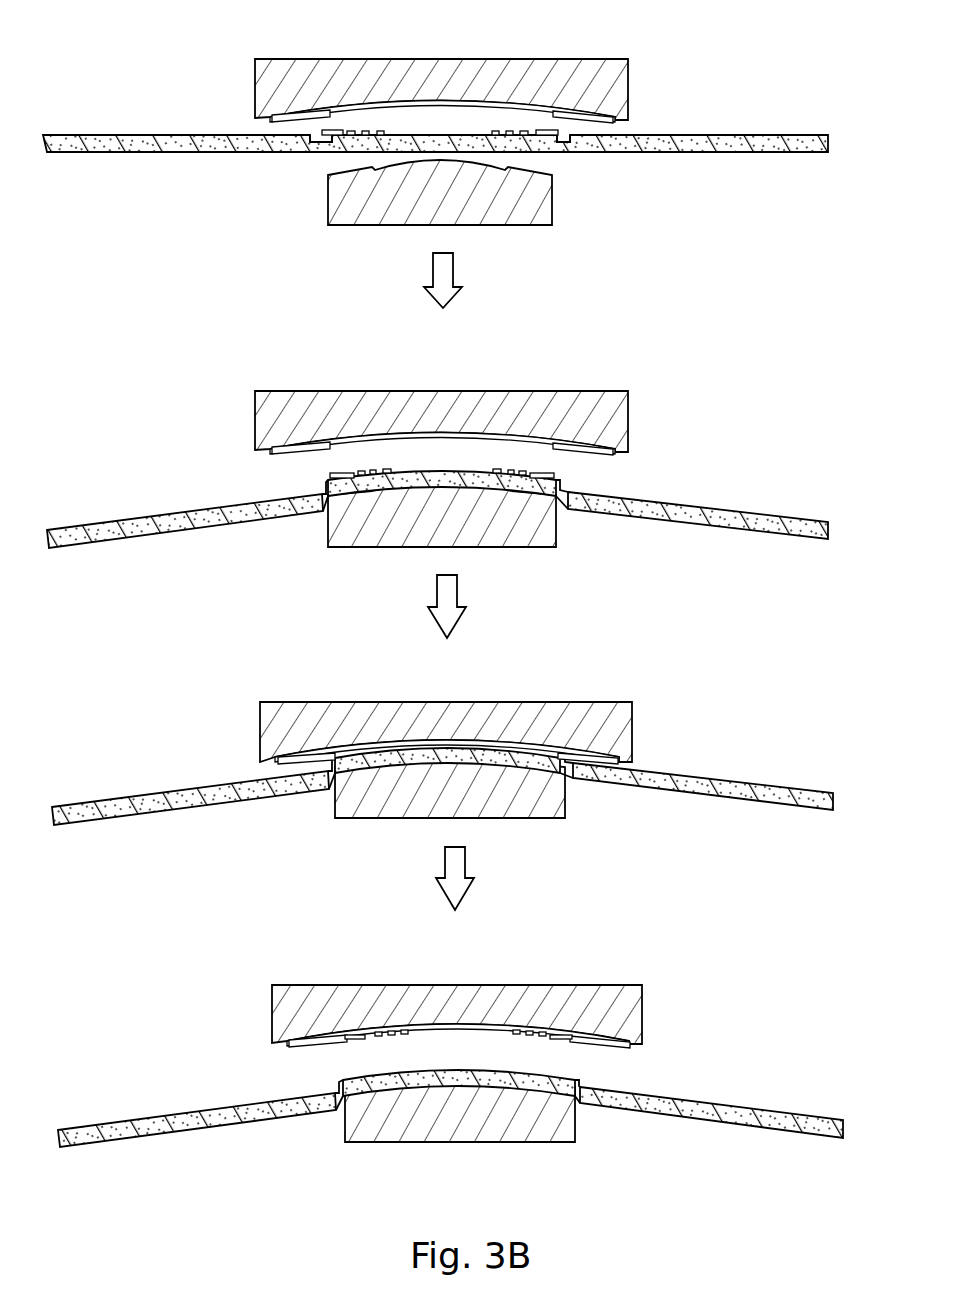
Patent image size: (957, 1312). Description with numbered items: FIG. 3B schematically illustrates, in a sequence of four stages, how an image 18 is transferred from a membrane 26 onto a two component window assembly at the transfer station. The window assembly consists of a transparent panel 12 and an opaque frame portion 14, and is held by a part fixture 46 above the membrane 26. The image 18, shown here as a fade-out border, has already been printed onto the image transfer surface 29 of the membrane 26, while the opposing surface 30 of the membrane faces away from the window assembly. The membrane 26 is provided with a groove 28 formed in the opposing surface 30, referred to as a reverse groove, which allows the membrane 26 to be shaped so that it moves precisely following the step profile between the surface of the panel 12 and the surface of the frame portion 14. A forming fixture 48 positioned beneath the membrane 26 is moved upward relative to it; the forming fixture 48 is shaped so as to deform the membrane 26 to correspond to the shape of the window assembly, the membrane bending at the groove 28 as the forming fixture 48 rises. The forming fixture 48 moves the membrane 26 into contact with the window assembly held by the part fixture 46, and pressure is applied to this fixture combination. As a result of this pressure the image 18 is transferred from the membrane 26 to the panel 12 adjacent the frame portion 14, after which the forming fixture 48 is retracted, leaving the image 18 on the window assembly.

The transparent panel 12 is at (481, 100).
The frame portion 14 is at (603, 124).
The image 18 is at (350, 104).
The membrane 26 is at (160, 126).
The groove 28 is at (321, 143).
The image transfer surface 29 is at (729, 134).
The opposing surface 30 is at (768, 152).
The part fixture 46 is at (278, 95).
The forming fixture 48 is at (360, 226).